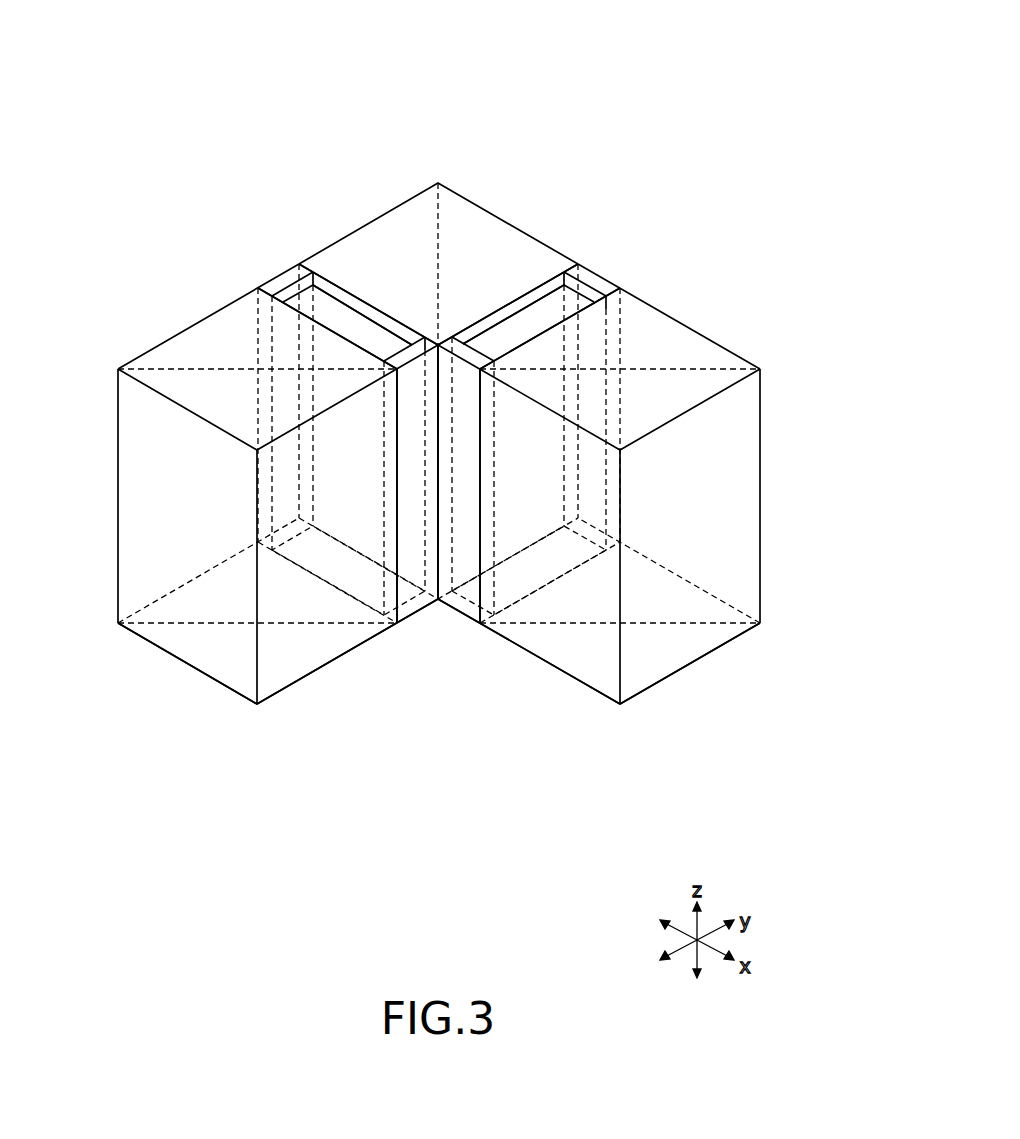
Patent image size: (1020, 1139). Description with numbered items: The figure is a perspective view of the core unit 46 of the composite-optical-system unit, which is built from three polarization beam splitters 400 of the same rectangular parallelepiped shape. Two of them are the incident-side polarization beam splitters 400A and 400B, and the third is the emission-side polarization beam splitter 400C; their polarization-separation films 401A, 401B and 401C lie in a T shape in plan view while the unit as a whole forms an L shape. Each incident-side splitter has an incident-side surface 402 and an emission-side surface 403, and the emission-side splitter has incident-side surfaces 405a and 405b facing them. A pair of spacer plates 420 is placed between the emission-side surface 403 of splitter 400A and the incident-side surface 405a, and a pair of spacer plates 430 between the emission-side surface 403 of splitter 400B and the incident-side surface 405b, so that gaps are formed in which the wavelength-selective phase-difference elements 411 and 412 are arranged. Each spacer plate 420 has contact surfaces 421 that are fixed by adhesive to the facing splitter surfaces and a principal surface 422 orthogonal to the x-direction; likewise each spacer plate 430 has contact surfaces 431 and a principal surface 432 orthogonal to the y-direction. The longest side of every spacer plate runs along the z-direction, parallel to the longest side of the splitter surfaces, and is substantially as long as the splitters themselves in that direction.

The core unit 46 is at (420, 103).
The polarization beam splitter 400 is at (436, 428).
The incident-side polarization beam splitter 400A is at (175, 352).
The incident-side polarization beam splitter 400B is at (664, 327).
The emission-side polarization beam splitter 400C is at (460, 210).
The polarization-separation film 401A is at (190, 628).
The polarization-separation film 401B is at (685, 630).
The polarization-separation film 401C is at (437, 233).
The incident-side surface 402 is at (325, 650).
The emission-side surface 403 is at (325, 322).
The incident-side surface 405a is at (367, 313).
The incident-side surface 405b is at (508, 312).
The wavelength-selective phase-difference element 411 is at (345, 322).
The wavelength-selective phase-difference element 412 is at (530, 322).
The spacer plate 420 is at (280, 277).
The contact surface 421 is at (305, 393).
The principal surface 422 is at (415, 570).
The spacer plate 430 is at (597, 282).
The contact surface 431 is at (571, 393).
The principal surface 432 is at (590, 482).